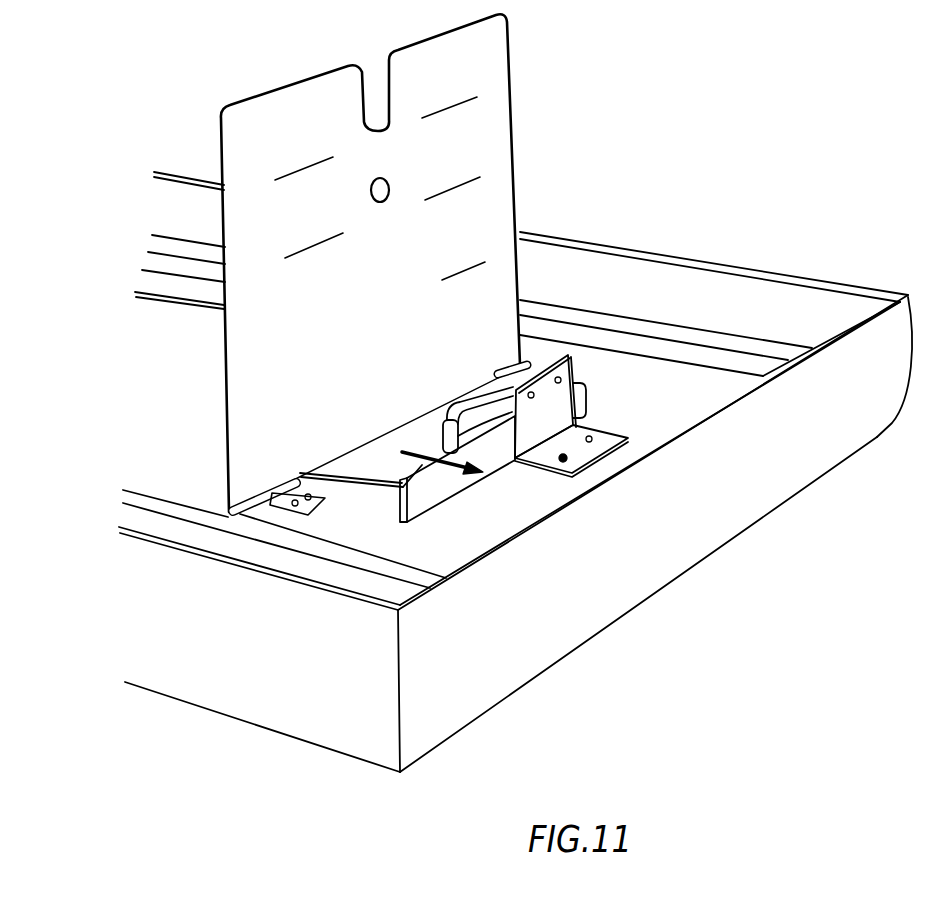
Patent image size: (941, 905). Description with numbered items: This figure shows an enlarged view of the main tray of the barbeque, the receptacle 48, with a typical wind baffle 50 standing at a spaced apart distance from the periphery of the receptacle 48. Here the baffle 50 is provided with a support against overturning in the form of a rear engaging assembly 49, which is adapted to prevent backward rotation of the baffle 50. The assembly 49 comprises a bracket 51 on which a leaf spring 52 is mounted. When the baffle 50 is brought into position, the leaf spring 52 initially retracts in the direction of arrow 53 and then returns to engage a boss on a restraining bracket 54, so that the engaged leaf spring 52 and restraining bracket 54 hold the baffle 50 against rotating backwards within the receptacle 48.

The receptacle 48 is at (733, 507).
The rear engaging assembly 49 is at (630, 274).
The baffle 50 is at (495, 132).
The bracket 51 is at (558, 420).
The leaf spring 52 is at (487, 417).
The arrow 53 is at (420, 450).
The restraining bracket 54 is at (432, 497).